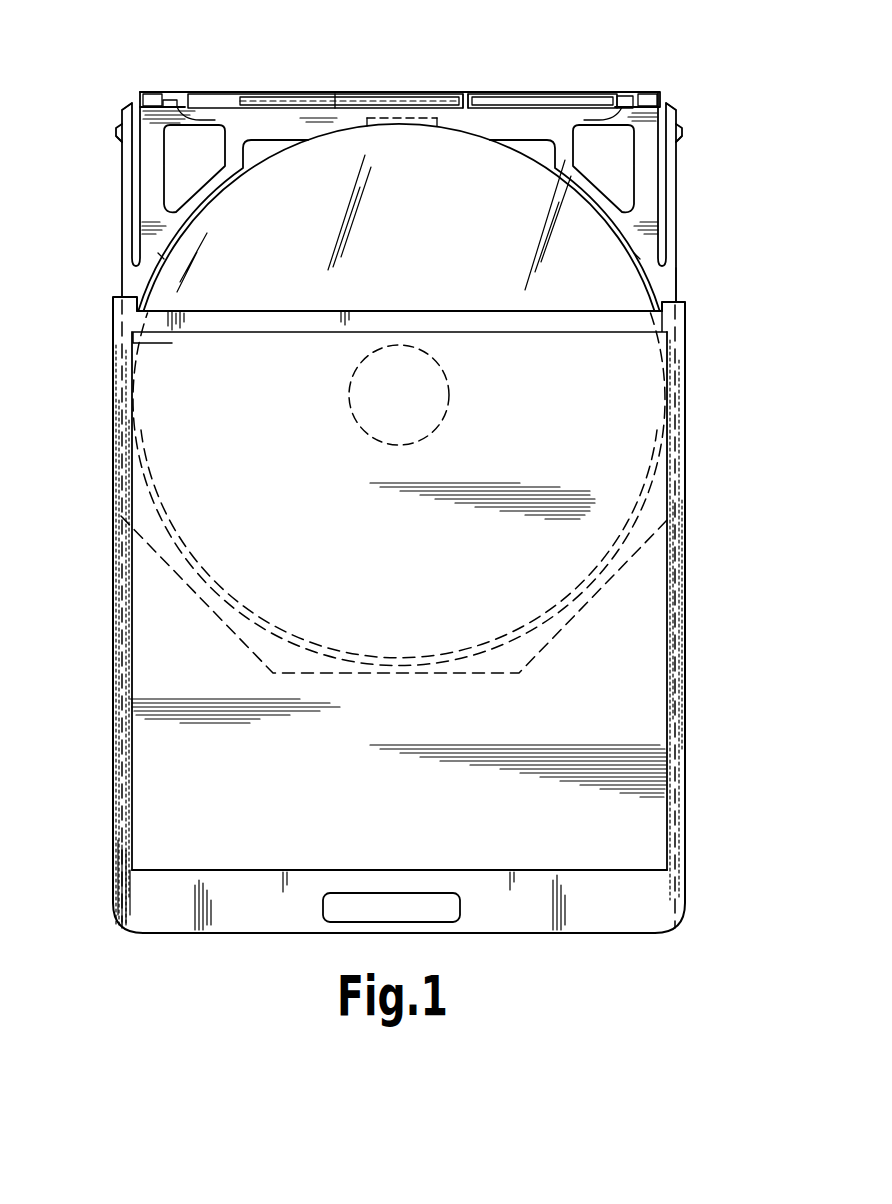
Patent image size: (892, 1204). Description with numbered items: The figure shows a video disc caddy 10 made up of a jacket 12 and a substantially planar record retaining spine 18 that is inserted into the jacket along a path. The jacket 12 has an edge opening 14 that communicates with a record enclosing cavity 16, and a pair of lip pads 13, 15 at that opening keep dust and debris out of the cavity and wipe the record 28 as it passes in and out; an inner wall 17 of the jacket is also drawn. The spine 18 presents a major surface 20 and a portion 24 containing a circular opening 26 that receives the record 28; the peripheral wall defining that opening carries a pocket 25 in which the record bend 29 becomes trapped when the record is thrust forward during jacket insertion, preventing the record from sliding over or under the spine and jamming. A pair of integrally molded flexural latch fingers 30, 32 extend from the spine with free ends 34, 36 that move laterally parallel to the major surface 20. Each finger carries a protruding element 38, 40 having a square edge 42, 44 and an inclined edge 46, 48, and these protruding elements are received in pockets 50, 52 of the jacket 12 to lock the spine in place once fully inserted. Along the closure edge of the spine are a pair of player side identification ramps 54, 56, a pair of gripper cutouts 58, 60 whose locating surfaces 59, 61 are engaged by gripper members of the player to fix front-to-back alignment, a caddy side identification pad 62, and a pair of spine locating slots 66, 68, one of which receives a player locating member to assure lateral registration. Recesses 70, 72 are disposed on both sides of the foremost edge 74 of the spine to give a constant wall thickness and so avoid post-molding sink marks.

The video disc caddy 10 is at (83, 306).
The jacket 12 is at (117, 653).
The lip pad 13 is at (678, 293).
The edge opening 14 is at (243, 311).
The lip pad 15 is at (120, 548).
The record enclosing cavity 16 is at (143, 688).
The right side wall 17 is at (653, 787).
The record retaining spine 18 is at (186, 44).
The major surface 20 is at (160, 228).
The portion having a circular opening 24 is at (678, 276).
The pocket 25 is at (400, 126).
The circular opening 26 is at (636, 262).
The record 28 is at (324, 296).
The record bend 29 is at (505, 148).
The flexural latch finger 30 is at (122, 197).
The flexural latch finger 32 is at (678, 197).
The free end 34 is at (122, 108).
The free end 36 is at (678, 108).
The protruding element 38 is at (123, 135).
The protruding element 40 is at (680, 136).
The square edge 42 is at (117, 128).
The square edge 44 is at (682, 130).
The inclined edge 46 is at (118, 134).
The inclined edge 48 is at (681, 137).
The pocket 50 is at (118, 345).
The pocket 52 is at (680, 345).
The player side identification ramp 54 is at (152, 93).
The player side identification ramp 56 is at (655, 94).
The gripper cutout 58 is at (185, 99).
The locating surface 59 is at (215, 120).
The gripper cutout 60 is at (626, 96).
The locating surface 61 is at (584, 120).
The caddy side identification pad 62 is at (231, 94).
The spine locating slot 66 is at (340, 94).
The spine locating slot 68 is at (466, 94).
The recess 70 is at (522, 94).
The recess 72 is at (305, 94).
The foremost edge 74 is at (352, 94).